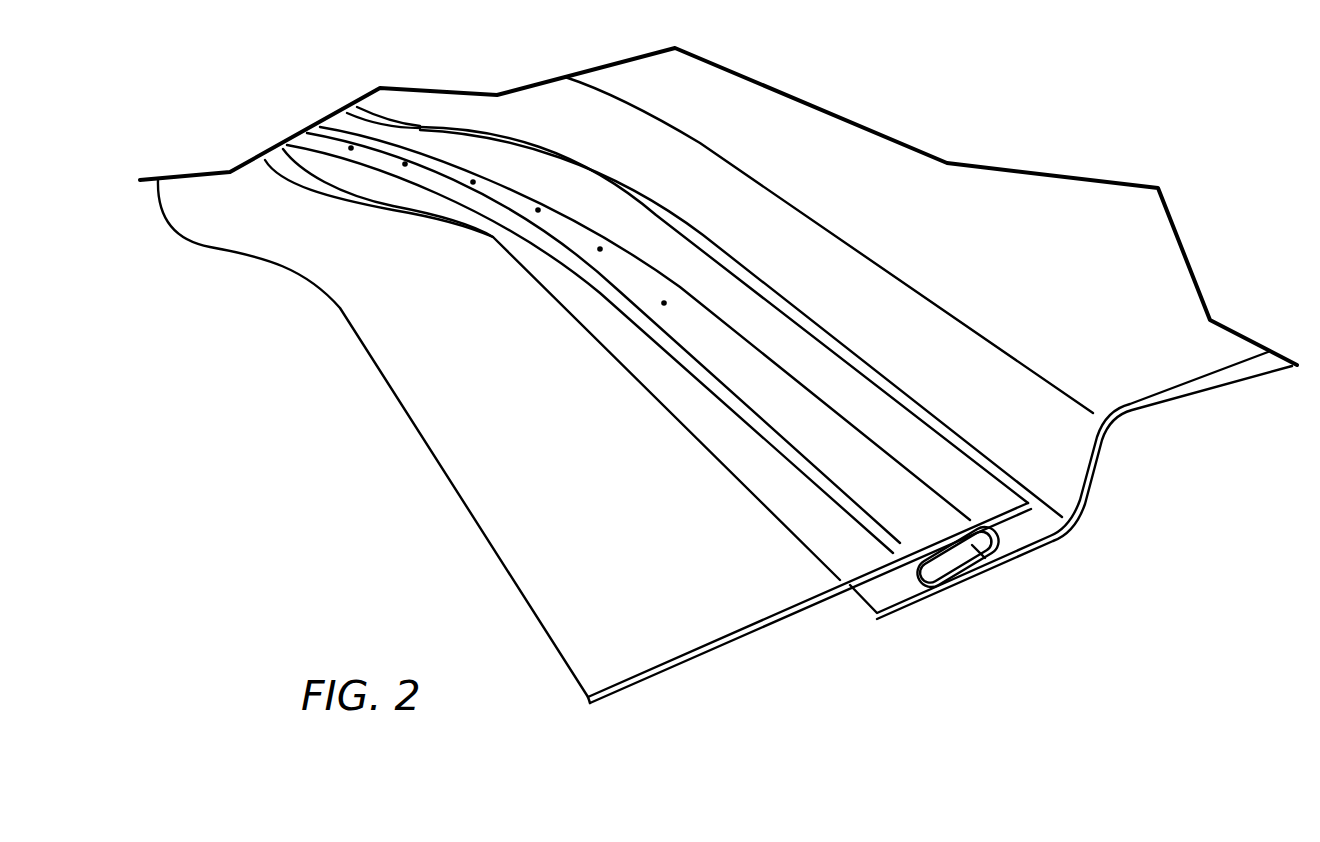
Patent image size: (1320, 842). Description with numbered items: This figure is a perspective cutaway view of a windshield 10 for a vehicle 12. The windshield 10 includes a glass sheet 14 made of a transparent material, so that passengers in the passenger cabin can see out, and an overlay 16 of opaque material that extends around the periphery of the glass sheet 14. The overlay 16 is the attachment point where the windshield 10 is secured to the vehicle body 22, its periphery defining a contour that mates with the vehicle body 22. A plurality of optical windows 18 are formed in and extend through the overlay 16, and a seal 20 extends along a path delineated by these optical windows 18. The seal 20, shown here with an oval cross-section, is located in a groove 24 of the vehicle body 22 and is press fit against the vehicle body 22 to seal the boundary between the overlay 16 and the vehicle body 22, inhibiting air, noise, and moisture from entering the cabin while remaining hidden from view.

The windshield 10 is at (630, 208).
The vehicle 12 is at (1201, 407).
The glass sheet 14 is at (242, 357).
The overlay 16 is at (820, 362).
The optical windows 18 is at (830, 447).
The seal 20 is at (645, 277).
The vehicle body 22 is at (1078, 360).
The groove 24 is at (1034, 532).